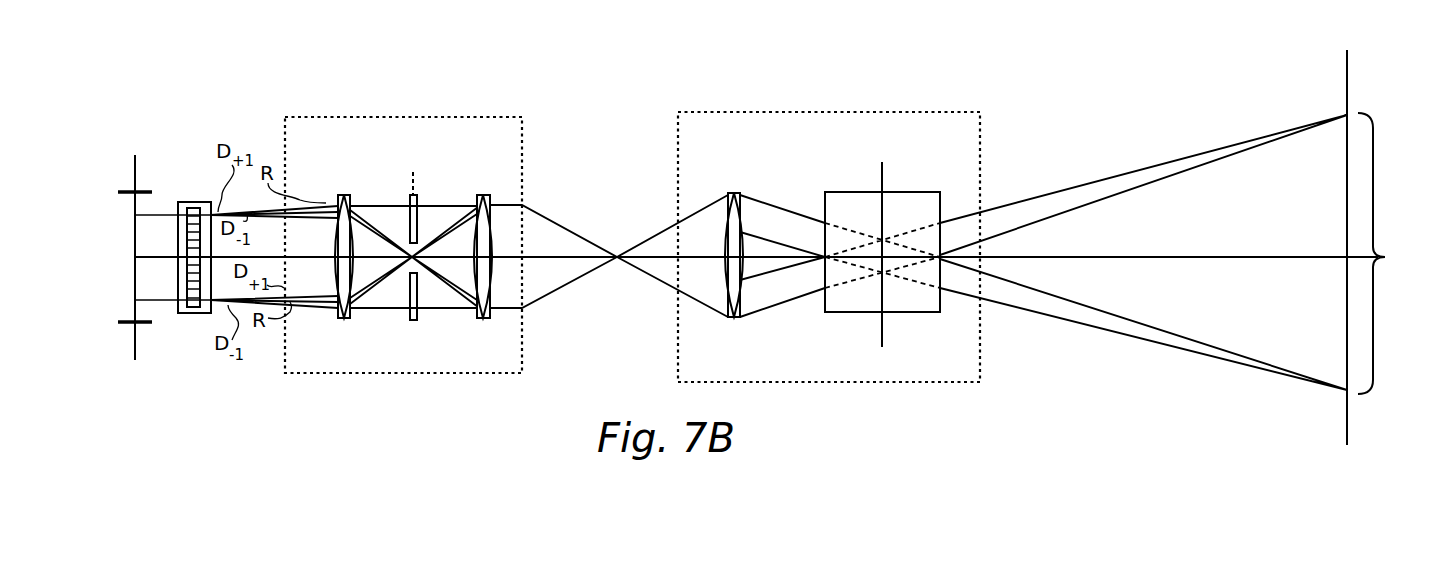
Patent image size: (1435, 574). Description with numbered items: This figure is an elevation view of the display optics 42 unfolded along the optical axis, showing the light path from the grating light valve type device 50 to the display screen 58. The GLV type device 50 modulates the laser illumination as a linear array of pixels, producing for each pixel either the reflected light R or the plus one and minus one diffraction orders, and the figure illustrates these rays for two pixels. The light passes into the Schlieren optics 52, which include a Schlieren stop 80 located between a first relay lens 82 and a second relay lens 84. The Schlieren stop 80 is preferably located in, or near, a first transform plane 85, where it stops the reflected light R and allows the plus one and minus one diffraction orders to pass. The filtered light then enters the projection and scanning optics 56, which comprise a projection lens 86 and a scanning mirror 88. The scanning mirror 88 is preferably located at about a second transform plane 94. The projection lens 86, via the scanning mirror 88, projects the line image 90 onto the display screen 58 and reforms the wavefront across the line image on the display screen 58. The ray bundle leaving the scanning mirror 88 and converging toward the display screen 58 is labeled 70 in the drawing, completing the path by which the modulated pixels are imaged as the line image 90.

The display optics 42 is at (584, 98).
The grating light valve type device 50 is at (185, 315).
The Schlieren optics 52 is at (340, 118).
The projection and scanning optics 56 is at (764, 113).
The display screen 58 is at (1347, 78).
The projected beam 70 is at (1168, 257).
The Schlieren stop 80 is at (416, 195).
The first relay lens 82 is at (346, 196).
The second relay lens 84 is at (484, 196).
The first transform plane 85 is at (413, 322).
The projection lens 86 is at (732, 194).
The scanning mirror 88 is at (905, 193).
The line image 90 is at (1391, 253).
The second transform plane 94 is at (880, 322).